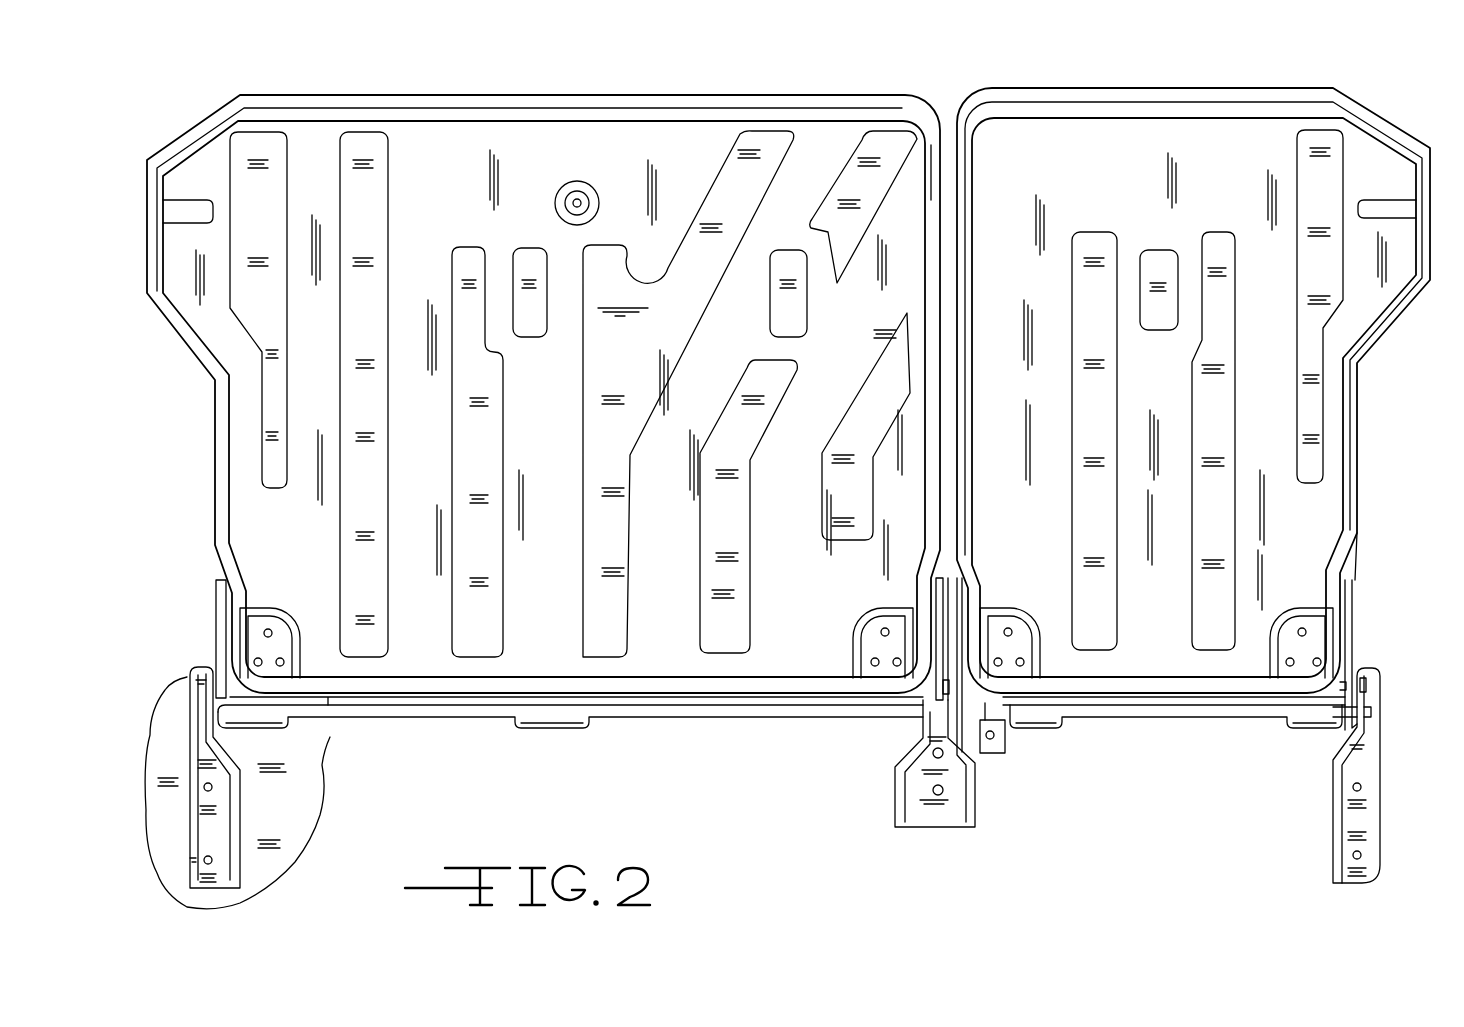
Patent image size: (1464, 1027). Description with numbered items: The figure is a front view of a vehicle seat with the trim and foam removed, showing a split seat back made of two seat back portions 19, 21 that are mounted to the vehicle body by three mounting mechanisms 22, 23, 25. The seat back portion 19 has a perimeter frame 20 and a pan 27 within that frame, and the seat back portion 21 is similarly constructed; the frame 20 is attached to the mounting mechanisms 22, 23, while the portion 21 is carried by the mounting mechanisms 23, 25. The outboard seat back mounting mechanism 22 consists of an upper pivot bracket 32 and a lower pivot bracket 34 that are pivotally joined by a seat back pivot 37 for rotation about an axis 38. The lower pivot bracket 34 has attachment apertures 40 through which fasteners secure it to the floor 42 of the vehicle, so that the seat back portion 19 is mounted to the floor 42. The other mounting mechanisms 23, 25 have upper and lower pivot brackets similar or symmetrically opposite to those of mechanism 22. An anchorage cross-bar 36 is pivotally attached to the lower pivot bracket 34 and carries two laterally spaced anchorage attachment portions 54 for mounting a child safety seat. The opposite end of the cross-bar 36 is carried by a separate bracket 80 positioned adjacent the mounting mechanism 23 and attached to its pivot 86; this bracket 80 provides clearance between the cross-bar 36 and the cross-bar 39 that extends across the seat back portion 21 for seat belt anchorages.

The seat back portion 19 is at (1197, 85).
The frame 20 is at (1397, 128).
The seat back portion 21 is at (738, 92).
The seat back mounting mechanism 22 is at (1390, 700).
The mounting mechanism 23 is at (908, 735).
The mounting mechanism 25 is at (244, 812).
The pan 27 is at (1122, 182).
The upper pivot bracket 32 is at (1356, 613).
The lower pivot bracket 34 is at (1380, 806).
The anchorage cross-bar 36 is at (1160, 718).
The seat back pivot 37 is at (1343, 662).
The axis 38 is at (1320, 683).
The cross-bar 39 is at (663, 718).
The attachment apertures 40 is at (1362, 784).
The floor 42 is at (292, 825).
The anchorage attachment portions 54 is at (265, 731).
The bracket 80 is at (985, 754).
The pivot 86 is at (970, 673).